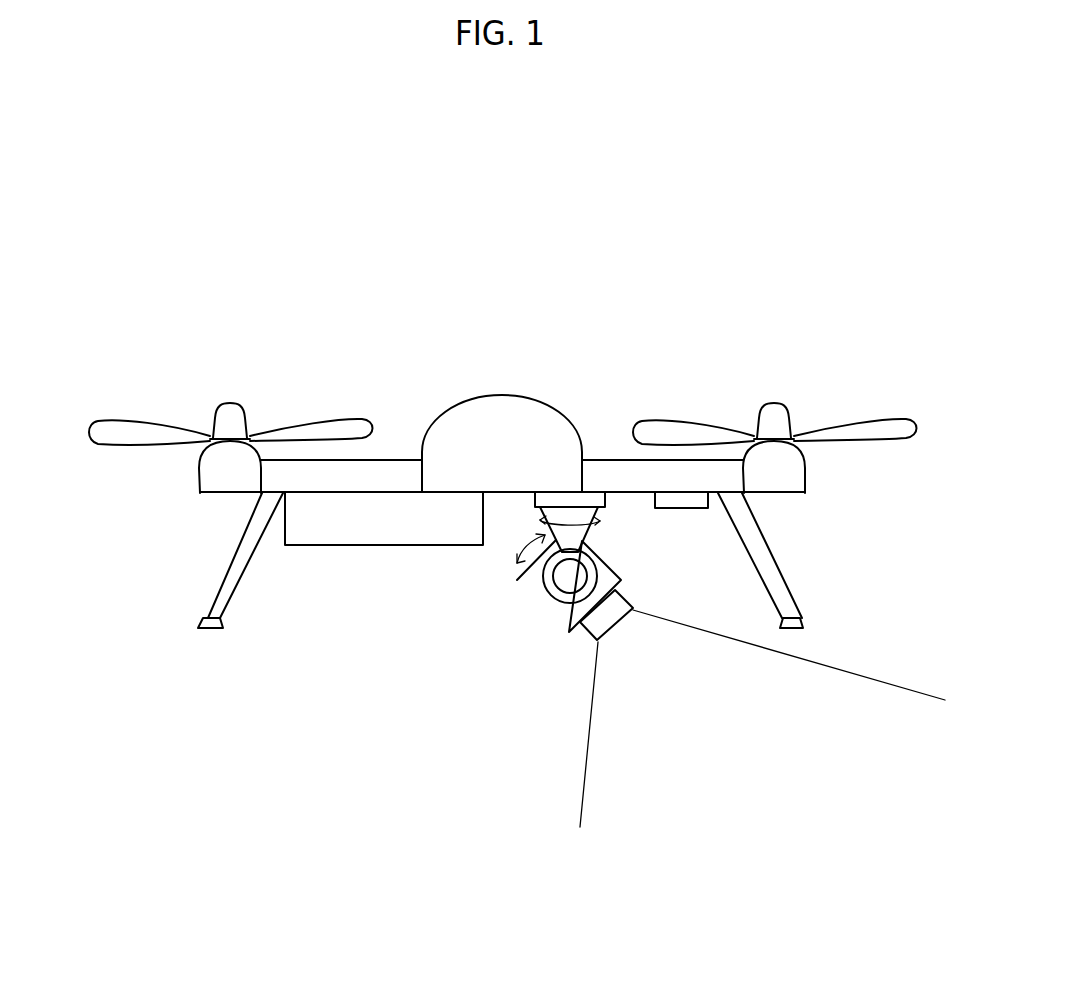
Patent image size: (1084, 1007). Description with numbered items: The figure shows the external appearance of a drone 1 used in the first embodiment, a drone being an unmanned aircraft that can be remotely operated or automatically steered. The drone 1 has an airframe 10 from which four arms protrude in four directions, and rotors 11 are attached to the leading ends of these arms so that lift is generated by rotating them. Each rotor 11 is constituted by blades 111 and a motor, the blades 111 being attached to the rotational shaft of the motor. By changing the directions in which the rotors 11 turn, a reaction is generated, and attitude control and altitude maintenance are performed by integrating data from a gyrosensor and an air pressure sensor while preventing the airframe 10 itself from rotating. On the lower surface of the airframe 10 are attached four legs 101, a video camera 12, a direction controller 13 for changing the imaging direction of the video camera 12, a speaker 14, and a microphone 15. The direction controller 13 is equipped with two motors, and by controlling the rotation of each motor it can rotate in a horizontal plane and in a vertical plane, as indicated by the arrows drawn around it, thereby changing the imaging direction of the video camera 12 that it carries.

The drone 1 is at (578, 373).
The airframe 10 is at (468, 402).
The rotor 11 is at (205, 484).
The blade 111 is at (112, 432).
The leg 101 is at (227, 565).
The speaker 14 is at (322, 547).
The microphone 15 is at (680, 510).
The direction controller 13 is at (545, 588).
The video camera 12 is at (590, 633).